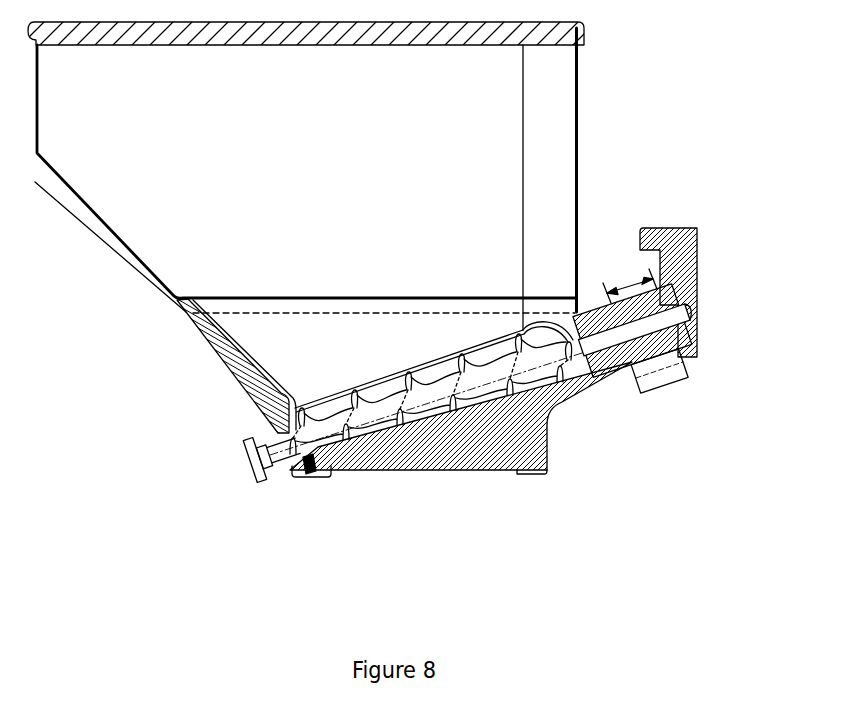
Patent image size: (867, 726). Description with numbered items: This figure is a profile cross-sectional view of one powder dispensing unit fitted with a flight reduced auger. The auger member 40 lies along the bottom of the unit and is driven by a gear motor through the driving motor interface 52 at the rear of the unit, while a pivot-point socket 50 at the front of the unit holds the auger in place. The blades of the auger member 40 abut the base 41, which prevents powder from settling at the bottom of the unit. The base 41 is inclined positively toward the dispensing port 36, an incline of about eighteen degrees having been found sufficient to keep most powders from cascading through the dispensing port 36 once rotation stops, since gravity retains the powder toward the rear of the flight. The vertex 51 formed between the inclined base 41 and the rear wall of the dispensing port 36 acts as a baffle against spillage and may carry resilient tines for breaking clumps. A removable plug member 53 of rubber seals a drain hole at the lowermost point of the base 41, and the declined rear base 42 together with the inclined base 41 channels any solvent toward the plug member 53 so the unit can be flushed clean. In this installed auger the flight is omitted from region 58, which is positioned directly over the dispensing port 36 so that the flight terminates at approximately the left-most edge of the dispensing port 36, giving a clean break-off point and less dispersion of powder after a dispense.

The dispensing port 36 is at (657, 377).
The auger member 40 is at (383, 415).
The base 41 is at (487, 402).
The declined rear base 42 is at (220, 364).
The pivot-point socket 50 is at (692, 317).
The vertex 51 is at (627, 353).
The driving motor interface 52 is at (242, 463).
The removable plug member 53 is at (312, 477).
The region 58 is at (618, 285).